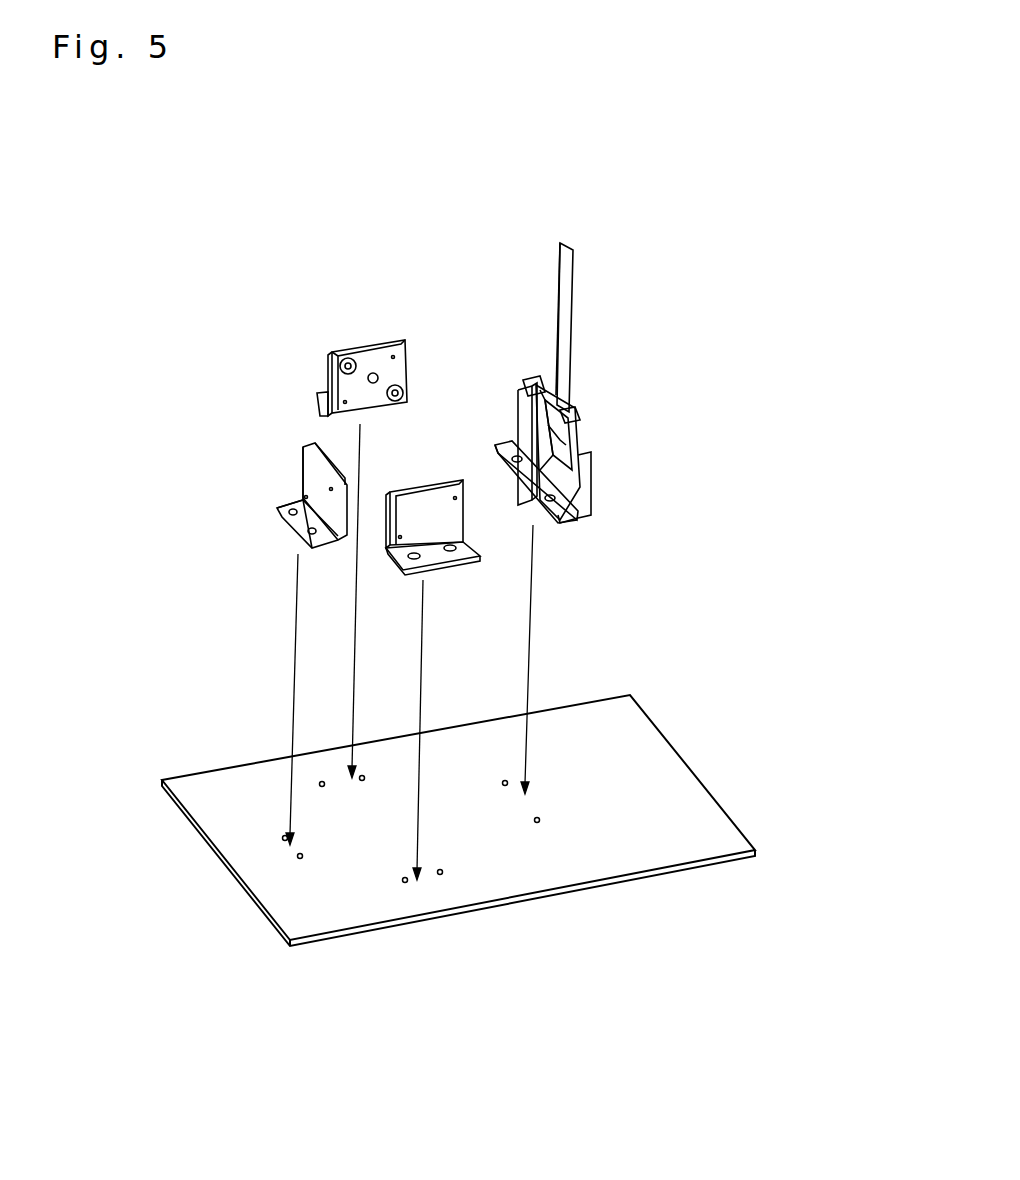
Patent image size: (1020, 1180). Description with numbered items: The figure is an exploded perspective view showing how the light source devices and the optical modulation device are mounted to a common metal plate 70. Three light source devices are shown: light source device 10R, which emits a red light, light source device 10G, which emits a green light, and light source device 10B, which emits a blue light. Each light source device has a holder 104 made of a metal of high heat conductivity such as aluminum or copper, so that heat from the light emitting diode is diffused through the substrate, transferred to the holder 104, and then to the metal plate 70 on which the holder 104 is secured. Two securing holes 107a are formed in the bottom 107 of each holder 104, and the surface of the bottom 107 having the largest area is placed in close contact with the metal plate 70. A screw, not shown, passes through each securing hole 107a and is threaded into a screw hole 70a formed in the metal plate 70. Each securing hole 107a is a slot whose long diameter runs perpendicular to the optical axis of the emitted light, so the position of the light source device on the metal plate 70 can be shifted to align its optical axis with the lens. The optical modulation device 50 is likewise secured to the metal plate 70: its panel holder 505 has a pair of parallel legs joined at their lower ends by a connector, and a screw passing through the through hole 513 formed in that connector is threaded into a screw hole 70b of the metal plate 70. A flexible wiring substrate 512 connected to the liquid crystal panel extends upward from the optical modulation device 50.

The metal plate 70 is at (670, 762).
The screw hole 70a is at (322, 780).
The screw hole 70b is at (506, 786).
The light source device 10R is at (357, 326).
The light source device 10G is at (252, 492).
The light source device 10B is at (460, 578).
The holder 104 is at (340, 358).
The bottom 107 is at (318, 405).
The securing hole 107a is at (462, 548).
The optical modulation device 50 is at (604, 430).
The panel holder 505 is at (563, 525).
The flexible wiring substrate 512 is at (575, 328).
The through hole 513 is at (512, 446).